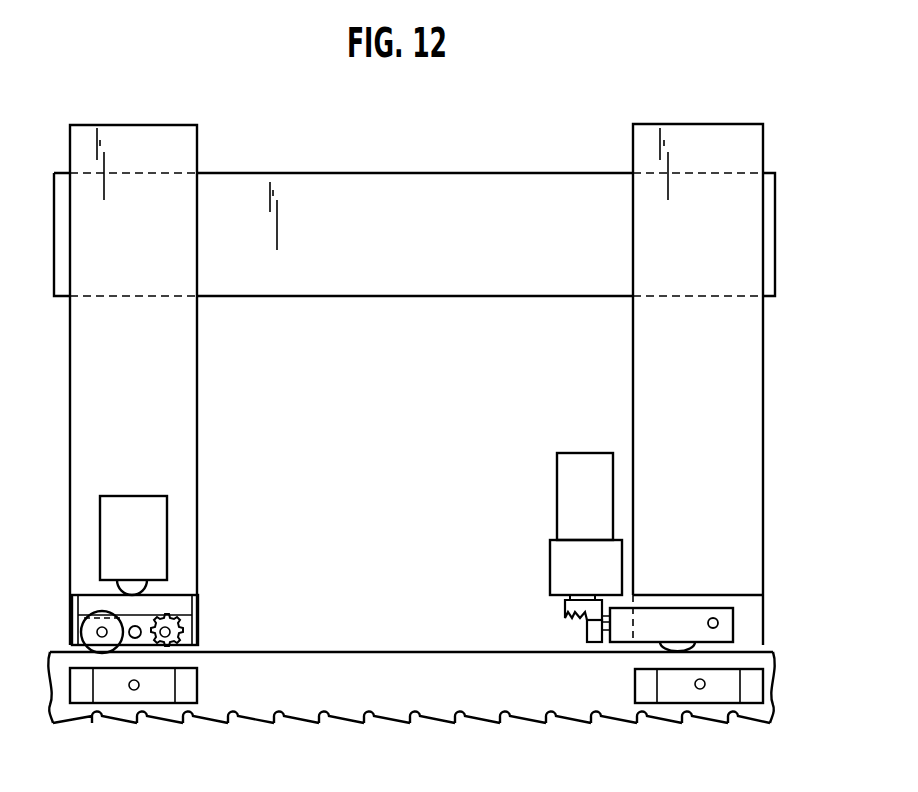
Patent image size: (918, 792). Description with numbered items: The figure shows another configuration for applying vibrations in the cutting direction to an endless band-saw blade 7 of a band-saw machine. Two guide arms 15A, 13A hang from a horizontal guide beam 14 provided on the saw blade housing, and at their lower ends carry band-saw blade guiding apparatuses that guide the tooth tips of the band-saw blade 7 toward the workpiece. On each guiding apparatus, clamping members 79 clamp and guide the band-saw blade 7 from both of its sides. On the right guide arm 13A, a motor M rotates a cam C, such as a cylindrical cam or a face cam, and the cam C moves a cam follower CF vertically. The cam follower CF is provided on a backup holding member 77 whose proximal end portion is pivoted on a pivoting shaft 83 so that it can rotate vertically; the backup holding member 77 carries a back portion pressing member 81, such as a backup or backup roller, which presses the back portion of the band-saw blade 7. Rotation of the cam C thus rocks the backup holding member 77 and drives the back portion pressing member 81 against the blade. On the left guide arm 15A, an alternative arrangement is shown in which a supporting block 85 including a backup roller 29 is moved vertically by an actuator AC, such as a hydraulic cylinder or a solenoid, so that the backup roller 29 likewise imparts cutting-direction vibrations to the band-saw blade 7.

The guide beam 14 is at (428, 249).
The guide arm 15A is at (151, 369).
The guide arm 13A is at (715, 369).
The actuator AC is at (153, 538).
The supporting block 85 is at (176, 606).
The backup roller 29 is at (86, 621).
The band-saw blade 7 is at (384, 665).
The clamping member 79 is at (108, 690).
The motor M is at (563, 490).
The cam C is at (565, 613).
The cam follower CF is at (590, 636).
The backup holding member 77 is at (665, 620).
The pivoting shaft 83 is at (719, 623).
The back portion pressing member 81 is at (672, 649).